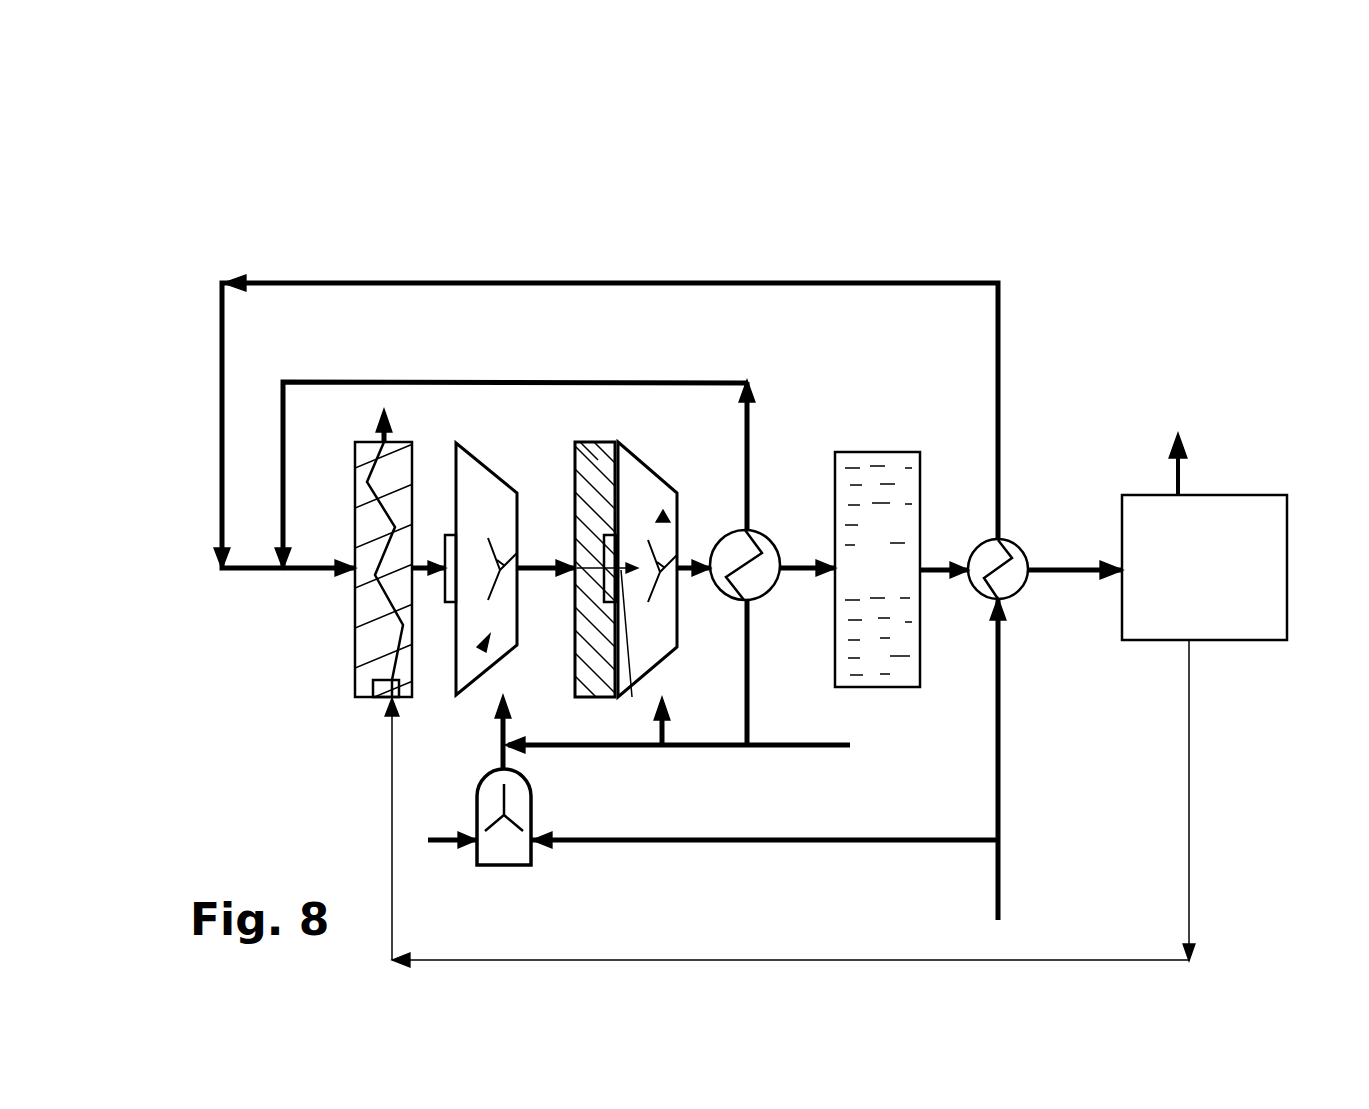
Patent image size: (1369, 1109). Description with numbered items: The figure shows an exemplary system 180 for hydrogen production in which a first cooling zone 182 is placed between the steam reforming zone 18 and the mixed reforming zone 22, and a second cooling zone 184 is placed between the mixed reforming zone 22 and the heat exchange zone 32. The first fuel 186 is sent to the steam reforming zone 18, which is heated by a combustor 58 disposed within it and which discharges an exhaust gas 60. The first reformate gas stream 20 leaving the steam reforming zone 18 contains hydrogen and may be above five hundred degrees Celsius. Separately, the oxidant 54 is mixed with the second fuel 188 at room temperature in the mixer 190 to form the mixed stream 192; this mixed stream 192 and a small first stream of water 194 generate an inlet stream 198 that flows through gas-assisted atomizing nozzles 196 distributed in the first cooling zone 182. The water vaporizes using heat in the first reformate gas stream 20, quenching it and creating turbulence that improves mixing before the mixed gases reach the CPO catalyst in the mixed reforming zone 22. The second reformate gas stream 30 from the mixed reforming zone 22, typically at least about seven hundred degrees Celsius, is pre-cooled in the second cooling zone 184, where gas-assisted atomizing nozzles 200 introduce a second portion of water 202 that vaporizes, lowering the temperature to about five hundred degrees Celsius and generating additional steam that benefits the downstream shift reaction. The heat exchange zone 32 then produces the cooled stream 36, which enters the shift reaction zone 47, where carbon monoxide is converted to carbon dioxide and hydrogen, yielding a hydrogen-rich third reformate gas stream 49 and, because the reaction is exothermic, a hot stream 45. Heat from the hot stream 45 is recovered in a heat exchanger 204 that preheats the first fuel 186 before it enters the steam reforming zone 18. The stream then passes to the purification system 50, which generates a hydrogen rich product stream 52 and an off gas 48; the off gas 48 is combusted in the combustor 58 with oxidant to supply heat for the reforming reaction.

The system for hydrogen production 180 is at (90, 155).
The first fuel 186 is at (220, 406).
The first reformate gas stream 20 is at (414, 582).
The steam reforming zone 18 is at (355, 652).
The exhaust gas 60 is at (387, 429).
The combustor 58 is at (385, 692).
The first cooling zone 182 is at (480, 463).
The gas-assisted atomizing nozzles 196 is at (516, 550).
The mixed reforming zone 22 is at (606, 446).
The second reformate gas stream 30 is at (632, 700).
The second cooling zone 184 is at (632, 492).
The gas-assisted atomizing nozzles 200 is at (660, 541).
The heat exchange zone 32 is at (757, 530).
The cooled stream 36 is at (797, 572).
The shift reaction zone 47 is at (862, 482).
The hot stream 45 is at (938, 566).
The heat exchanger 204 is at (1006, 538).
The third reformate gas stream 49 is at (1047, 567).
The purification system 50 is at (1266, 608).
The hydrogen rich product stream 52 is at (1183, 482).
The off gas 48 is at (1195, 708).
The second fuel 188 is at (740, 845).
The first stream of water 194 is at (622, 749).
The second portion of water 202 is at (669, 710).
The inlet stream 198 is at (497, 704).
The mixed stream 192 is at (475, 745).
The mixer 190 is at (514, 848).
The oxidant 54 is at (447, 848).